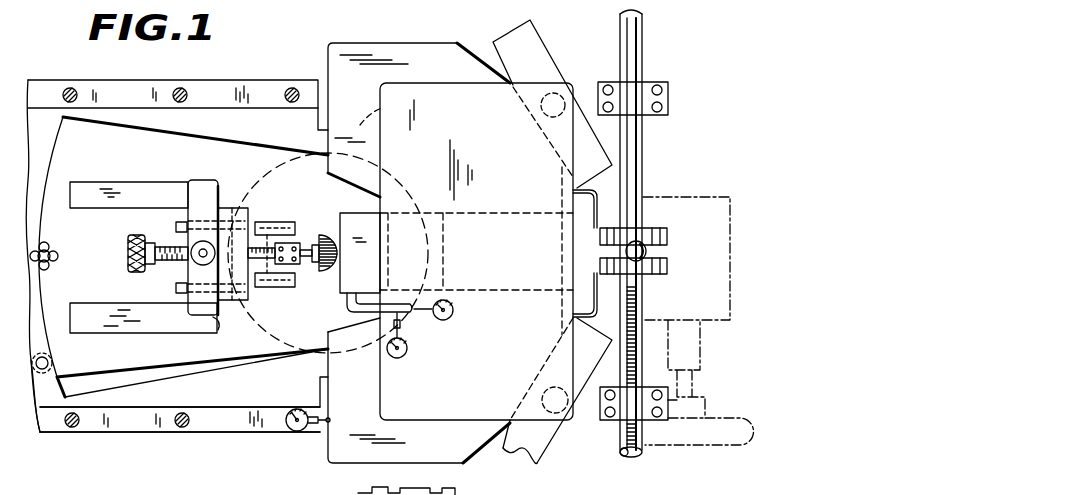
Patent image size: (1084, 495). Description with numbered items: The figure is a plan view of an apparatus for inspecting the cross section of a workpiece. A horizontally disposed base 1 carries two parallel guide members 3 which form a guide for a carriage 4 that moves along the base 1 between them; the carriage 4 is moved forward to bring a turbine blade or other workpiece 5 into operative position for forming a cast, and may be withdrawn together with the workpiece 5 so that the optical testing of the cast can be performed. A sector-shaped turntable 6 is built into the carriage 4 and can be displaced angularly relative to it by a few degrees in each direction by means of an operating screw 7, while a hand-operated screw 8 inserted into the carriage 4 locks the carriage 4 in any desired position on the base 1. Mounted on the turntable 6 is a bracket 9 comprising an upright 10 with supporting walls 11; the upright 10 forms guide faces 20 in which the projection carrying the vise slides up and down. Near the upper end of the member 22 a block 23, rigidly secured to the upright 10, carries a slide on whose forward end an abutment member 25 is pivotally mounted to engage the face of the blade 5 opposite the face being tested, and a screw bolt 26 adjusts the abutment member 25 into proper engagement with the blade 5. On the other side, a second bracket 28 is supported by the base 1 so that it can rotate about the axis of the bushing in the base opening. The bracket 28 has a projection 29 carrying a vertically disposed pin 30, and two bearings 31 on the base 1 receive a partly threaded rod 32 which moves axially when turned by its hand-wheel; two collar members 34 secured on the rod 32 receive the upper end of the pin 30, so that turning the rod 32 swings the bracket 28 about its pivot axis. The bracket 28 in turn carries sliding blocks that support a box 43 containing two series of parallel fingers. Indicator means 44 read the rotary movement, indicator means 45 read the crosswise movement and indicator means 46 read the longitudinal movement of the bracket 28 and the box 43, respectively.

The base 1 is at (225, 395).
The guide members 3 is at (98, 427).
The carriage 4 is at (53, 397).
The workpiece 5 is at (303, 272).
The turntable 6 is at (140, 357).
The operating screw 7 is at (46, 362).
The hand-operated screw 8 is at (58, 254).
The bracket 9 is at (226, 174).
The upright 10 is at (213, 317).
The supporting walls 11 is at (93, 187).
The guide faces 20 is at (200, 207).
The member 22 is at (200, 233).
The block 23 is at (233, 207).
The abutment member 25 is at (320, 243).
The screw bolt 26 is at (167, 243).
The second bracket 28 is at (340, 455).
The projection 29 is at (600, 200).
The pin 30 is at (657, 250).
The bearings 31 is at (635, 95).
The partly threaded rod 32 is at (625, 468).
The collar members 34 is at (663, 233).
The box 43 is at (367, 233).
The indicator means 44 is at (297, 432).
The indicator means 45 is at (407, 360).
The indicator means 46 is at (452, 318).